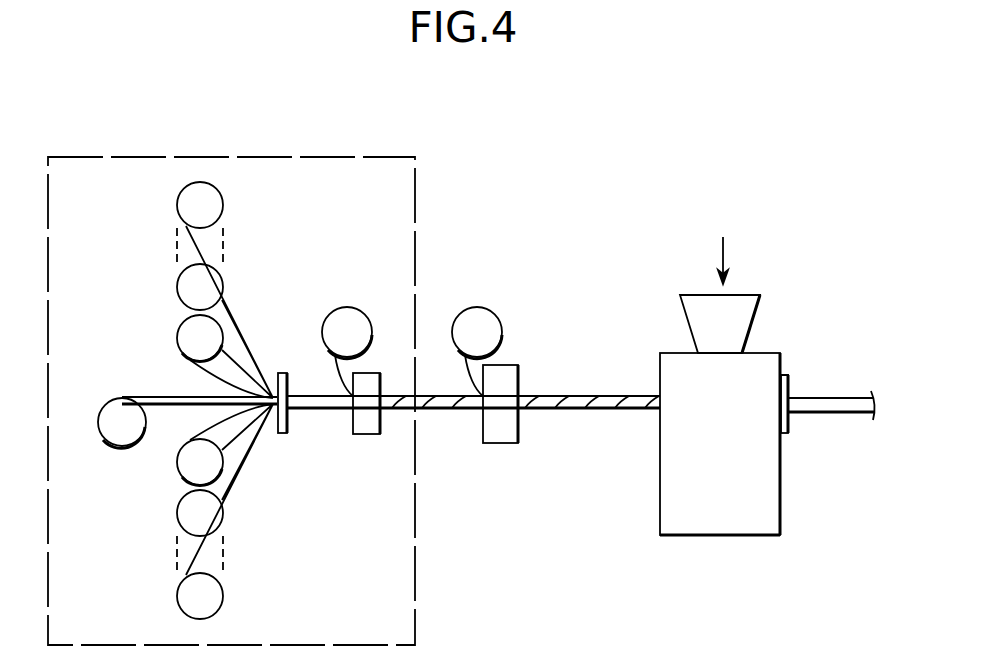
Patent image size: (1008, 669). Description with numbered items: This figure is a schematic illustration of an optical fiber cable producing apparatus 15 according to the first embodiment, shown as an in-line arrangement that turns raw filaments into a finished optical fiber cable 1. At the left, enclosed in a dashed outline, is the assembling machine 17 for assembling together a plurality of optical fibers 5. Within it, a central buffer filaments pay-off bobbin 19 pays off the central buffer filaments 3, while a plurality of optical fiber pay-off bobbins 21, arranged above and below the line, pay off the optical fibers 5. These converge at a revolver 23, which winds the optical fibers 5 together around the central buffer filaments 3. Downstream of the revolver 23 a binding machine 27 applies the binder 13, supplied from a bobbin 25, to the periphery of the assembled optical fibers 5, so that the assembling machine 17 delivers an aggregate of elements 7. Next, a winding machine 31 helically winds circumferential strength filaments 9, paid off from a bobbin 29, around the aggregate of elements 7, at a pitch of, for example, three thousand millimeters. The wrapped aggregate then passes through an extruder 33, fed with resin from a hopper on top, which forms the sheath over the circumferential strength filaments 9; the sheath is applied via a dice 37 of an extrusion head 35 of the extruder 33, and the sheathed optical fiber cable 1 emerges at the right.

The cable 1 is at (838, 400).
The central buffer filaments 3 is at (160, 397).
The optical fibers 5 is at (238, 362).
The aggregate of elements 7 is at (440, 412).
The circumferential strength filaments 9 is at (466, 374).
The binder 13 is at (334, 374).
The optical fiber cable producing apparatus 15 is at (687, 178).
The assembling machine 17 is at (416, 200).
The central buffer filaments pay-off bobbin 19 is at (106, 415).
The optical fiber pay-off bobbins 21 is at (178, 208).
The revolver 23 is at (288, 430).
The bobbin 25 is at (365, 318).
The binding machine 27 is at (365, 440).
The bobbin 29 is at (495, 318).
The winding machine 31 is at (505, 445).
The extruder 33 is at (680, 350).
The extrusion head 35 is at (793, 383).
The dice 37 is at (790, 424).